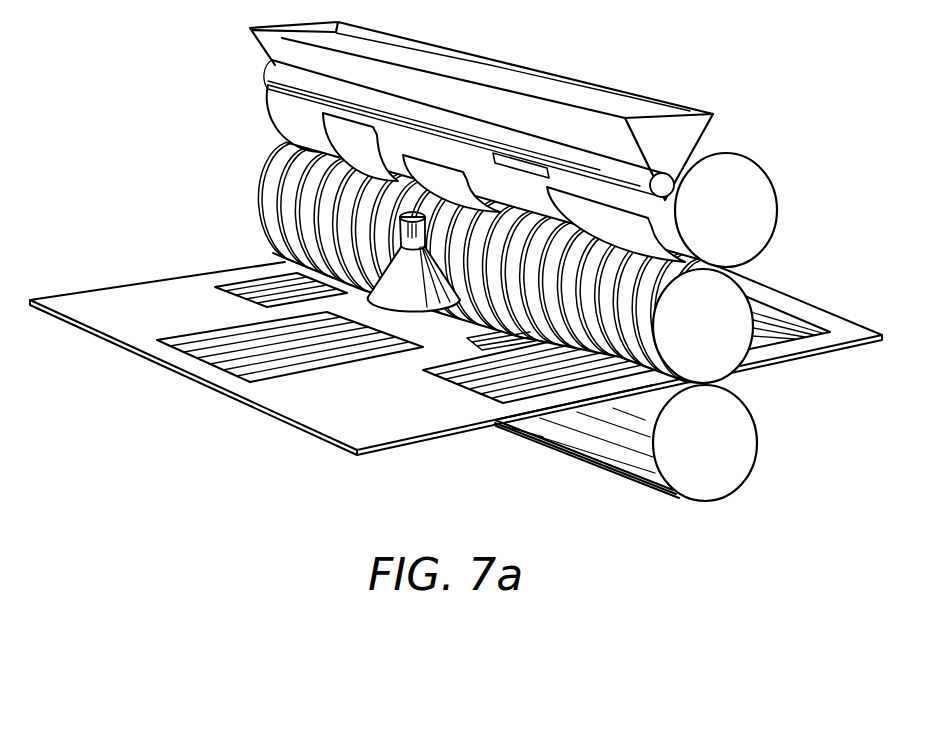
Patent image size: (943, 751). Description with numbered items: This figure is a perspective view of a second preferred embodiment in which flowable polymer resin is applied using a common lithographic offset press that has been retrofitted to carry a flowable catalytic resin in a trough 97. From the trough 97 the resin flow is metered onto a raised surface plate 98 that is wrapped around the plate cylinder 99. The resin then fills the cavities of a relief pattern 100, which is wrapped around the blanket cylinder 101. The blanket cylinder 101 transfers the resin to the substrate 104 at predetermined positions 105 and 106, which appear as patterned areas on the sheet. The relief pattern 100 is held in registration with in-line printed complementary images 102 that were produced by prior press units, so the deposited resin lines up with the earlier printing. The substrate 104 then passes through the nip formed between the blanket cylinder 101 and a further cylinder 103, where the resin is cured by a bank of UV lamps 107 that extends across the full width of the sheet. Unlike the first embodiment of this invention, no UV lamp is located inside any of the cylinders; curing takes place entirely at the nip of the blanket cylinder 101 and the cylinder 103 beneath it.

The trough 97 is at (550, 97).
The raised surface plate 98 is at (332, 142).
The plate cylinder 99 is at (752, 180).
The relief pattern 100 is at (288, 198).
The blanket cylinder 101 is at (712, 358).
The in-line printed complementary images 102 is at (793, 330).
The cylinder 103 is at (717, 450).
The substrate 104 is at (320, 400).
The predetermined position 105 is at (233, 357).
The predetermined position 106 is at (250, 287).
The bank of UV lamps 107 is at (414, 293).